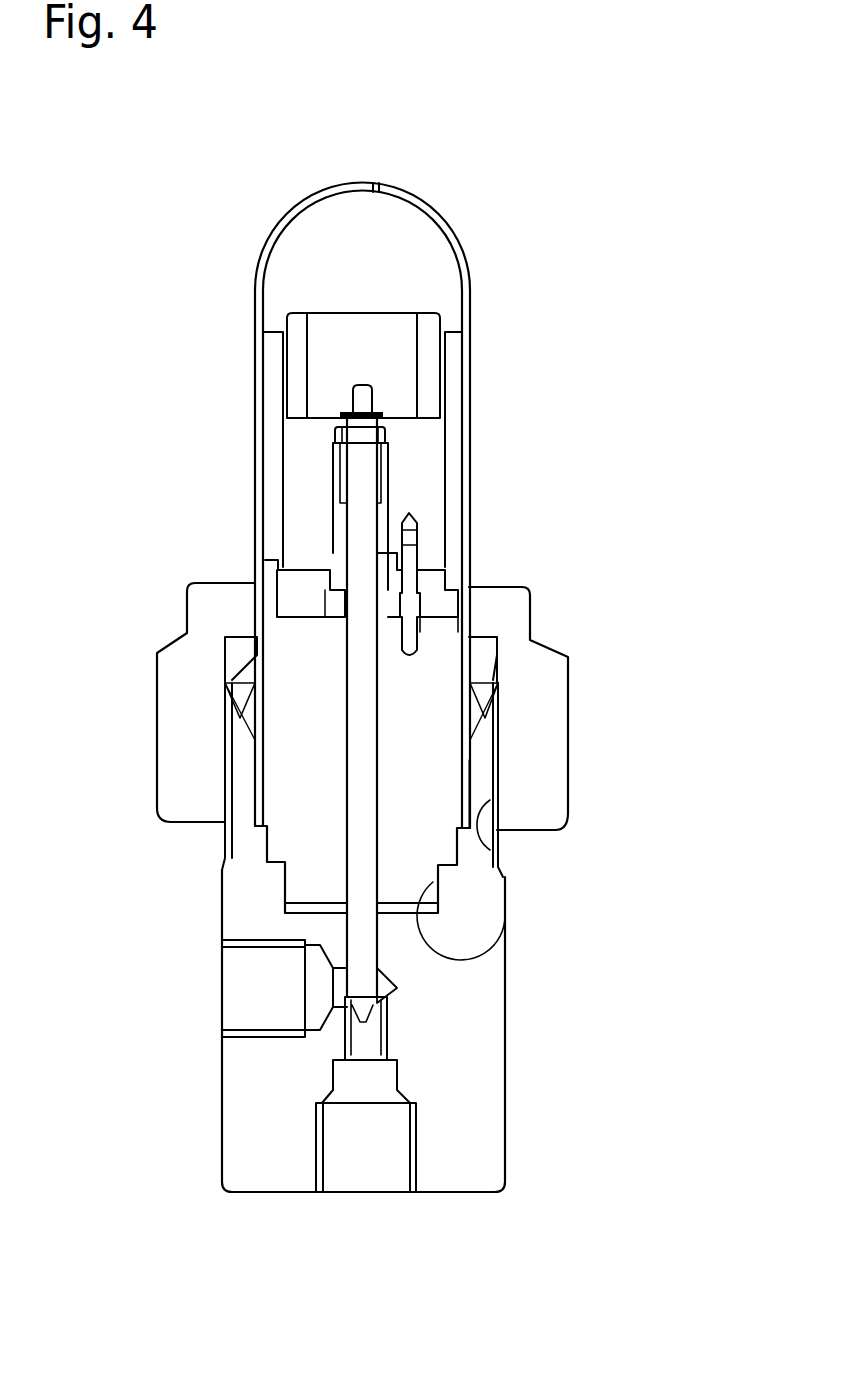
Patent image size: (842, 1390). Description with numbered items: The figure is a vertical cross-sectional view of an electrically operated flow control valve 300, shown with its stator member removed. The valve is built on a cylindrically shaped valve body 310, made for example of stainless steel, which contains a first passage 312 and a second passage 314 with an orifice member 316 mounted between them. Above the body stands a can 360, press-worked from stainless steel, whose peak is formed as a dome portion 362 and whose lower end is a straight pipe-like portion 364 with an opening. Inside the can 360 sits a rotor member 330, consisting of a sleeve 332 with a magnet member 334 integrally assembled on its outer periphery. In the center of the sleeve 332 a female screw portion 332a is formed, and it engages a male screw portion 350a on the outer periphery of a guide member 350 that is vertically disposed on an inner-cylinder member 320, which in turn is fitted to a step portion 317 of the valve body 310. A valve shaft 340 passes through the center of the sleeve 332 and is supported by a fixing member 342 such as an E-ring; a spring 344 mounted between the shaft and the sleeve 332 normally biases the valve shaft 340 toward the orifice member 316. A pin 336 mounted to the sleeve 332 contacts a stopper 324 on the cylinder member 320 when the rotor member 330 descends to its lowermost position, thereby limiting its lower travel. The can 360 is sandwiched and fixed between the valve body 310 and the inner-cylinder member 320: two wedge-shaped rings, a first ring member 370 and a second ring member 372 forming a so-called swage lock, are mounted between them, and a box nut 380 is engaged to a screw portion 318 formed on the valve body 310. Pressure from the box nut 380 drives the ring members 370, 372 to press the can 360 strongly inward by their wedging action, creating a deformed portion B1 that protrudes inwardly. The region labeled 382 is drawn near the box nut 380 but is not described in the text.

The electrically operated flow control valve 300 is at (582, 387).
The valve body 310 is at (480, 1065).
The first passage 312 is at (250, 982).
The second passage 314 is at (365, 1170).
The orifice member 316 is at (345, 1040).
The step portion 317 is at (453, 957).
The screw portion 318 is at (227, 850).
The inner-cylinder member 320 is at (453, 862).
The stopper 324 is at (425, 630).
The rotor member 330 is at (320, 235).
The sleeve 332 is at (290, 325).
The female screw portion 332a is at (340, 500).
The magnet member 334 is at (270, 418).
The pin 336 is at (415, 545).
The valve shaft 340 is at (350, 780).
The fixing member 342 is at (350, 410).
The spring 344 is at (385, 440).
The guide member 350 is at (338, 600).
The male screw portion 350a is at (395, 495).
The can 360 is at (462, 236).
The dome portion 362 is at (377, 186).
The straight pipe-like portion 364 is at (470, 770).
The first ring member 370 is at (483, 680).
The second ring member 372 is at (490, 648).
The box nut 380 is at (550, 735).
The housing bore 382 is at (497, 850).
The deformed portion B1 is at (238, 692).